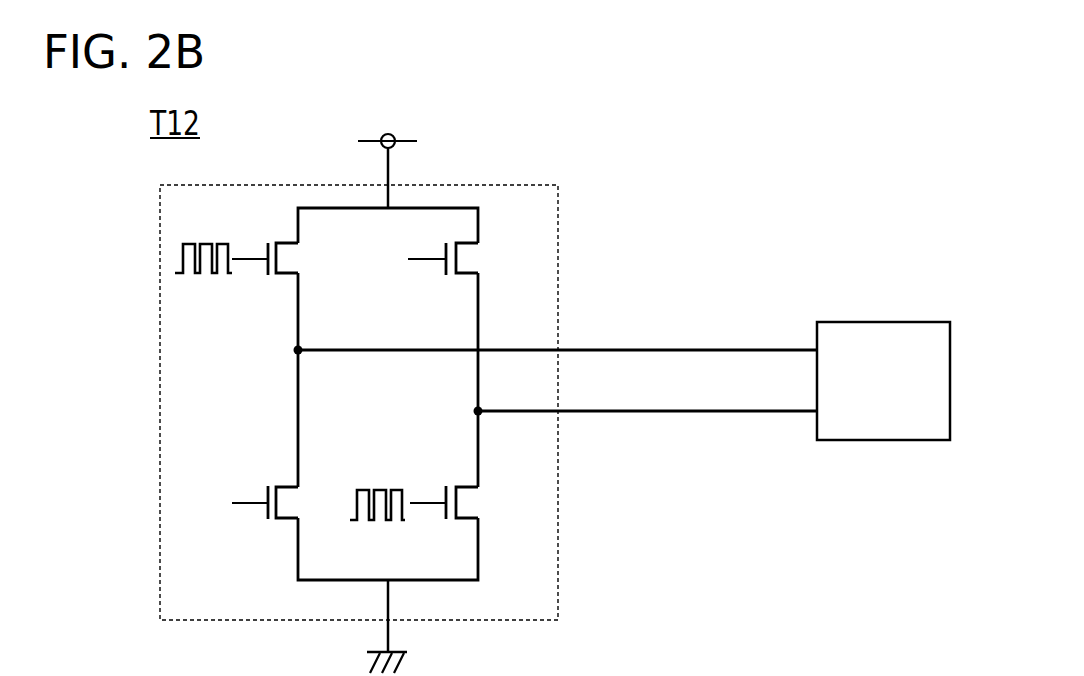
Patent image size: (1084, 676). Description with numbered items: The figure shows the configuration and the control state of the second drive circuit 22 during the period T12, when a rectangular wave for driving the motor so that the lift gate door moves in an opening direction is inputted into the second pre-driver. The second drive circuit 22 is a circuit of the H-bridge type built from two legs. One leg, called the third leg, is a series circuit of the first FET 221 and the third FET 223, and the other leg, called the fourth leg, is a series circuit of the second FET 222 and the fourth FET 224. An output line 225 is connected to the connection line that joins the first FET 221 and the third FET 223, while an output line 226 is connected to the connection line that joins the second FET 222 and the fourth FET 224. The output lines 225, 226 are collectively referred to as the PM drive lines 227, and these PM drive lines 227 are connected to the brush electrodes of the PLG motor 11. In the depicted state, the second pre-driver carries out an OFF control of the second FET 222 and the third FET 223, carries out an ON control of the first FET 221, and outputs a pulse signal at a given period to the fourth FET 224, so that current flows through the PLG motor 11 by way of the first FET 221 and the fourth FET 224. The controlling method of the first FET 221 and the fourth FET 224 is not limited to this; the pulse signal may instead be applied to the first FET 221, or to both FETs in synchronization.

The PLG motor 11 is at (882, 441).
The second drive circuit 22 is at (402, 394).
The first FET 221 is at (314, 275).
The second FET 222 is at (490, 259).
The third FET 223 is at (316, 488).
The fourth FET 224 is at (491, 486).
The output line 225 is at (653, 350).
The output line 226 is at (737, 410).
The PM drive lines 227 is at (557, 317).